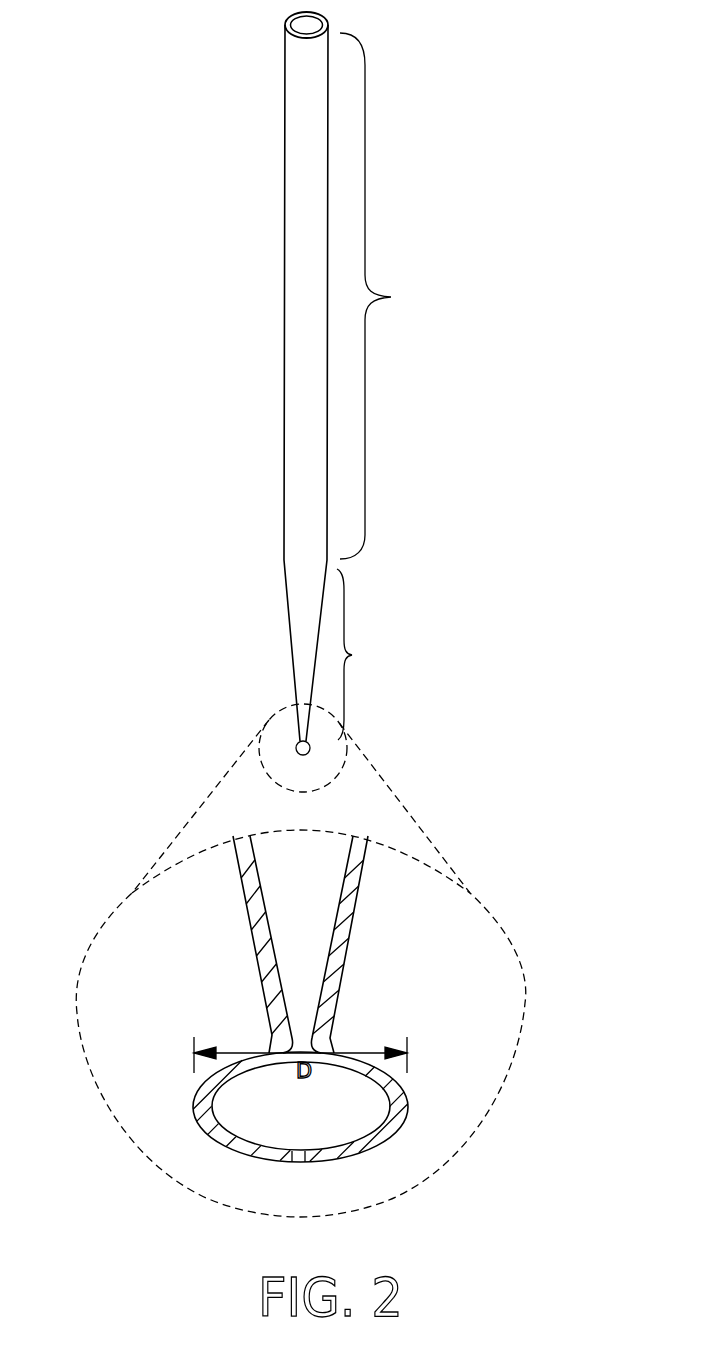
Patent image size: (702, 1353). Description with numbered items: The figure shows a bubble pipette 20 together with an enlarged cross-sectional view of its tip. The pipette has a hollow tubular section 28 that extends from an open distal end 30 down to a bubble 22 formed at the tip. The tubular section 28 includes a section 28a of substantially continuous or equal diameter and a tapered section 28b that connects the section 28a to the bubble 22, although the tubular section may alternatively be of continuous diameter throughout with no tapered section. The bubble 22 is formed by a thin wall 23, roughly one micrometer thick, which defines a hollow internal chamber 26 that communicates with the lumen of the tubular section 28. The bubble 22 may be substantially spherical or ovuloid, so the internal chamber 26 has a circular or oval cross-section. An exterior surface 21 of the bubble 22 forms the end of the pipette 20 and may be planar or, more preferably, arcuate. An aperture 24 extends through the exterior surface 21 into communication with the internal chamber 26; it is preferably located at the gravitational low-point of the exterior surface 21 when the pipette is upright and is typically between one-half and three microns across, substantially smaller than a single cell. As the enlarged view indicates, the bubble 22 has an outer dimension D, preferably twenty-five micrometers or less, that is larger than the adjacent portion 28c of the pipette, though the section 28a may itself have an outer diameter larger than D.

The bubble pipette 20 is at (496, 271).
The exterior surface 21 is at (343, 1178).
The bubble 22 is at (309, 753).
The wall 23 is at (232, 1150).
The aperture 24 is at (298, 1163).
The internal chamber 26 is at (313, 1121).
The tubular section 28 is at (270, 318).
The section of substantially continuous diameter 28a is at (388, 296).
The tapered section 28b is at (209, 979).
The adjacent portion 28c is at (332, 1043).
The open distal end 30 is at (324, 19).